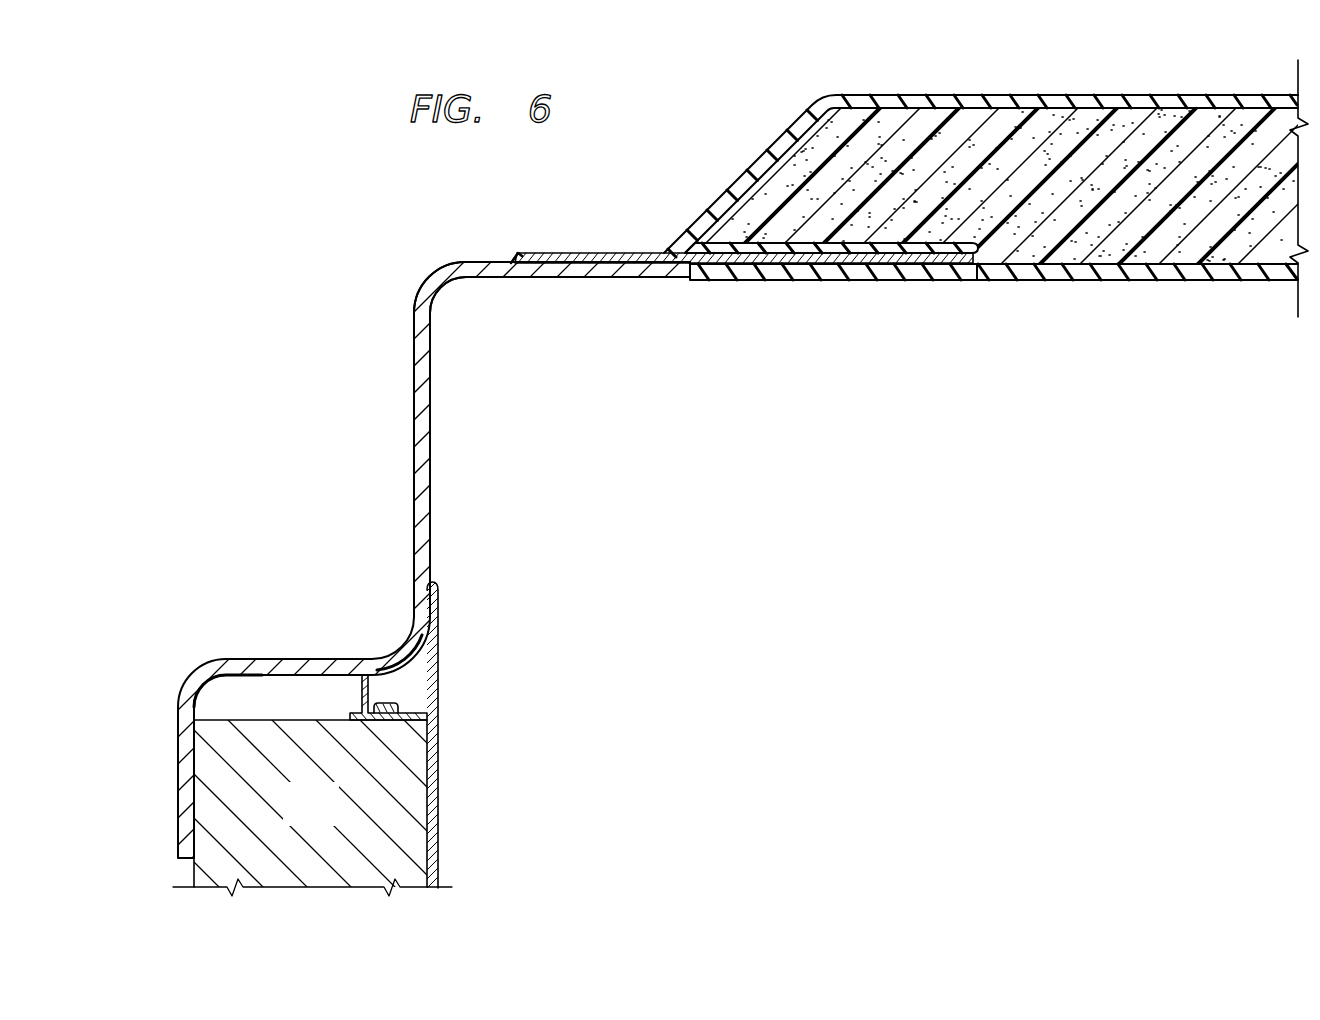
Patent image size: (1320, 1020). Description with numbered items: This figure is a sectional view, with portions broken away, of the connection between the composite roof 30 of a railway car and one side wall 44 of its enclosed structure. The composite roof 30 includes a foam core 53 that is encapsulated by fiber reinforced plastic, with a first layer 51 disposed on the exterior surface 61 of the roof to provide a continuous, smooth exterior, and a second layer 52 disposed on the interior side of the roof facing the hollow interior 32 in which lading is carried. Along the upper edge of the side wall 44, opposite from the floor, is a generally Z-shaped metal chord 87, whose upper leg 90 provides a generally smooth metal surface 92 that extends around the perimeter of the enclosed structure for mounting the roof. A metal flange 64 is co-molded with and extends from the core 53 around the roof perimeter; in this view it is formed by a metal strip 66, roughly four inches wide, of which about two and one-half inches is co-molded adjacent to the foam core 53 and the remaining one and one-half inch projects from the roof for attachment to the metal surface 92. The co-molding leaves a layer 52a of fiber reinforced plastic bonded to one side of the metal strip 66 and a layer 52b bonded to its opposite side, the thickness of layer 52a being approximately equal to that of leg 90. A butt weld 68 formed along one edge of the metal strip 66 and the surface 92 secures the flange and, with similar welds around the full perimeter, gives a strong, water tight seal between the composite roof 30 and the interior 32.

The composite roof 30 is at (856, 188).
The hollow interior 32 is at (448, 374).
The side wall 44 is at (295, 819).
The first layer of fiber reinforced plastic 51 is at (892, 100).
The second layer of fiber reinforced plastic 52 is at (1216, 281).
The layer of fiber reinforced plastic 52a is at (808, 281).
The layer of fiber reinforced plastic 52b is at (760, 246).
The foam core 53 is at (1112, 263).
The exterior surface 61 is at (966, 86).
The metal flange 64 is at (626, 248).
The metal strip 66 is at (570, 253).
The butt weld 68 is at (514, 253).
The metal chord 87 is at (440, 490).
The upper leg 90 is at (436, 282).
The metal surface 92 is at (480, 262).